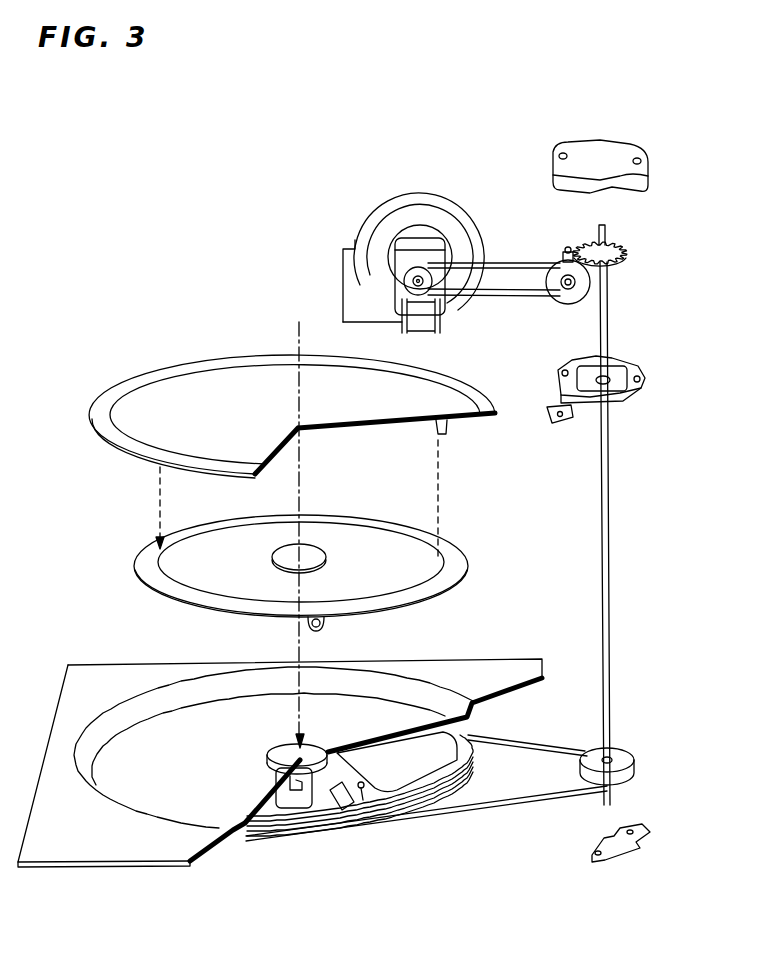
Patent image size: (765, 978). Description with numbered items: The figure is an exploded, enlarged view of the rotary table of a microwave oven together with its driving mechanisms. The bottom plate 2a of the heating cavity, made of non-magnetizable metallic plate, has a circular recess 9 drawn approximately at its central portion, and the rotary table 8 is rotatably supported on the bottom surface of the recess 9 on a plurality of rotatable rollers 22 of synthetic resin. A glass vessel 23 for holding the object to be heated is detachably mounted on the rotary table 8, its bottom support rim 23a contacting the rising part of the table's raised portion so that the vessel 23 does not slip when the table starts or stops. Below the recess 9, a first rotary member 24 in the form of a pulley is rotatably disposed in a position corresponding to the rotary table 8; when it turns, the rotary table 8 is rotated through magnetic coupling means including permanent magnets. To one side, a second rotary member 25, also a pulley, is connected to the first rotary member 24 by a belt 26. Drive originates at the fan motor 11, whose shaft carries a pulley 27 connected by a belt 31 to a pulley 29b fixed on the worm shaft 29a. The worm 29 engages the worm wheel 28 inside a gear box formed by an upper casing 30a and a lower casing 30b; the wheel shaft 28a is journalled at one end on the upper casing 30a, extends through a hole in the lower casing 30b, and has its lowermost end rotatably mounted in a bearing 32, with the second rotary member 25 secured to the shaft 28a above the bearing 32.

The fan motor 11 is at (415, 243).
The belt 31 is at (490, 238).
The pulley 27 is at (404, 279).
The worm 29 is at (565, 250).
The worm shaft 29a is at (566, 292).
The pulley 29b is at (530, 298).
The worm wheel 28 is at (617, 248).
The wheel shaft 28a is at (609, 305).
The upper casing 30a is at (616, 152).
The lower casing 30b is at (636, 397).
The vessel 23 is at (105, 442).
The bottom support rim 23a is at (444, 434).
The rotary table 8 is at (153, 580).
The rotatable rollers 22 is at (326, 623).
The bottom plate 2a is at (93, 845).
The circular recess 9 is at (192, 778).
The first rotary member 24 is at (393, 803).
The second rotary member 25 is at (628, 758).
The belt 26 is at (512, 803).
The bearing 32 is at (610, 862).